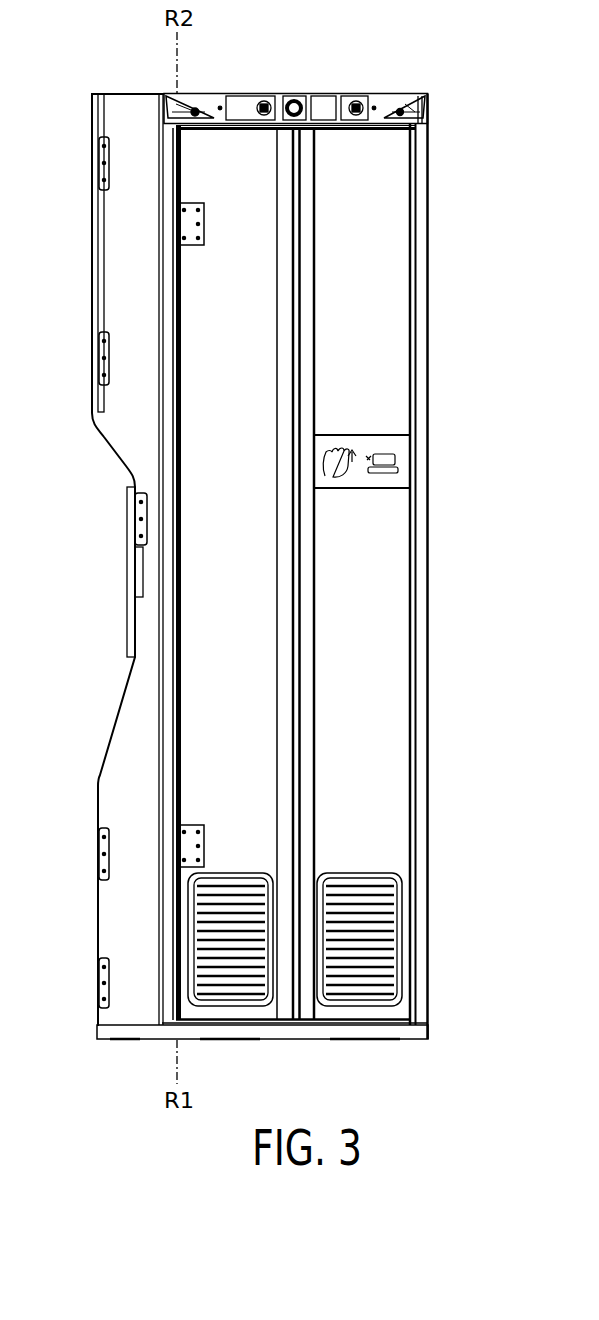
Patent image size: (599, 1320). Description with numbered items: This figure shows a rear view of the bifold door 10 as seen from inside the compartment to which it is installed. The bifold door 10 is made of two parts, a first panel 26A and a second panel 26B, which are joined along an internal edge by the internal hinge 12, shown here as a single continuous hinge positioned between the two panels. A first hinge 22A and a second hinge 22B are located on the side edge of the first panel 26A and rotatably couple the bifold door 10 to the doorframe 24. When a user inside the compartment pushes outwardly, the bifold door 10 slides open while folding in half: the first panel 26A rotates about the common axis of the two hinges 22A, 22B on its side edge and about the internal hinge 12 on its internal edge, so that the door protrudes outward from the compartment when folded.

The bifold door 10 is at (458, 190).
The internal hinge 12 is at (296, 366).
The doorframe 24 is at (131, 93).
The first panel 26A is at (215, 470).
The second panel 26B is at (388, 598).
The first hinge 22A is at (187, 824).
The second hinge 22B is at (188, 246).